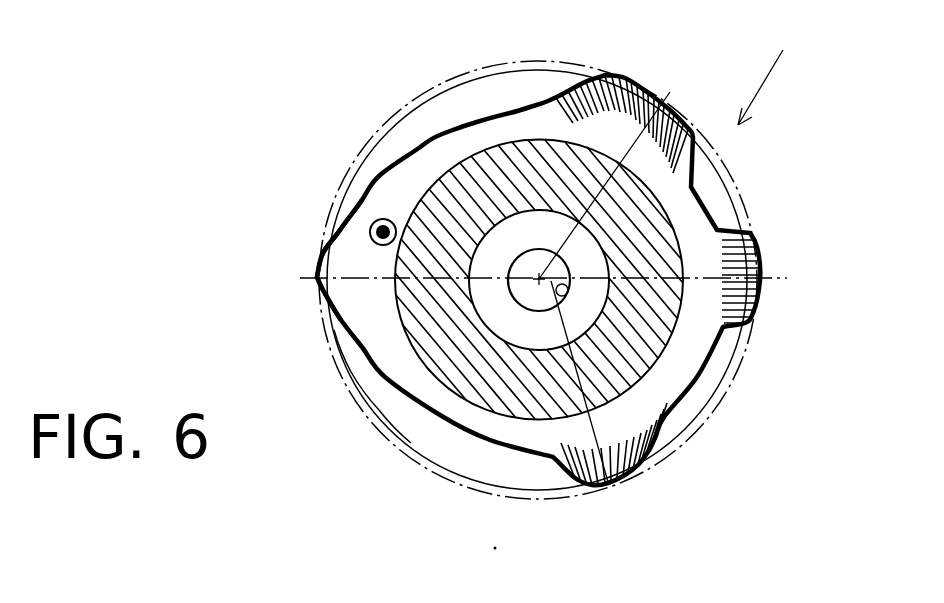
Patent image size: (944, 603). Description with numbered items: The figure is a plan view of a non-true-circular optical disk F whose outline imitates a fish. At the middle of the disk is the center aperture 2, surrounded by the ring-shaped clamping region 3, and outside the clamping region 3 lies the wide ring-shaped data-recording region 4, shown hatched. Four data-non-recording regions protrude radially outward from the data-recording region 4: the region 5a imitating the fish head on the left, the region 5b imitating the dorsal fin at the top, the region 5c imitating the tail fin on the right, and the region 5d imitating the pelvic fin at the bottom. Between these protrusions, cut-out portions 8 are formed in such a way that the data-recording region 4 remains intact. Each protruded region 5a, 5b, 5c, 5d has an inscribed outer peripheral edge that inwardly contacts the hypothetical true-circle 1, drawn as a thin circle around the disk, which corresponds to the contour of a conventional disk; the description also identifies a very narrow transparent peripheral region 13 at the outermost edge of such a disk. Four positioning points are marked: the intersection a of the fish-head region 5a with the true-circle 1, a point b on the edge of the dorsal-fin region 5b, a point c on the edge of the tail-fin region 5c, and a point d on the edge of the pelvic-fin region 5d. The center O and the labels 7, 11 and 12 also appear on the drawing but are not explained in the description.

The hypothetical true-circle 1 is at (425, 100).
The center aperture 2 is at (573, 322).
The ring-shaped clamping region 3 is at (573, 347).
The ring-shaped data-recording region 4 is at (560, 340).
The data-non-recording region imitating fish head 5a is at (355, 262).
The data-non-recording region imitating dorsal fin 5b is at (617, 97).
The data-non-recording region imitating tail fin 5c is at (753, 225).
The data-non-recording region imitating pelvic fin 5d is at (643, 473).
The reference circle 7 is at (418, 127).
The cut-out portions 8 is at (475, 103).
The first arc portion 11 is at (332, 353).
The second arc portion 12 is at (350, 393).
The transparent peripheral region 13 is at (386, 430).
The positioning point a is at (317, 277).
The positioning point b is at (624, 175).
The positioning point c is at (763, 280).
The positioning point d is at (615, 480).
The center O is at (562, 265).
The non-true-circular optical disk F is at (772, 62).